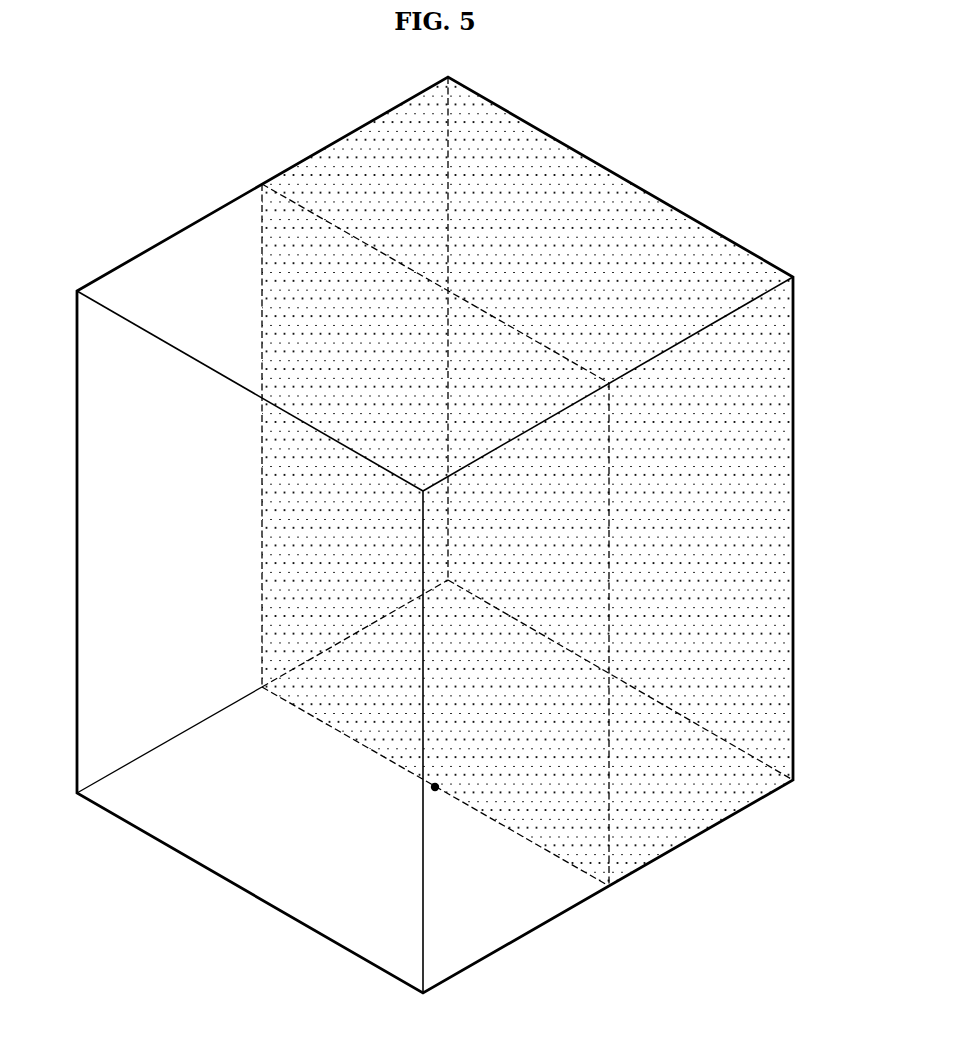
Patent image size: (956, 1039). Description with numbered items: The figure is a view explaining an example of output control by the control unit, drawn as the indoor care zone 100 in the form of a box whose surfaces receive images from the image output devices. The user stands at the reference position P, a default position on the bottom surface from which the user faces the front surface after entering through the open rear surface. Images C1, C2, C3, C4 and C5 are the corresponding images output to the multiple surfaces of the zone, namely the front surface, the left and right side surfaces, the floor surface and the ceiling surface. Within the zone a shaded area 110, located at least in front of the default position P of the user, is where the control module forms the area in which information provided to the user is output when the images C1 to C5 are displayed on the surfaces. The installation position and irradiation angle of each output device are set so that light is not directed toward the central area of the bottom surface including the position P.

The indoor care zone 100 is at (277, 110).
The area 110 is at (701, 376).
The image C1 is at (250, 642).
The image C2 is at (435, 283).
The image C3 is at (608, 581).
The image C4 is at (527, 680).
The image C5 is at (343, 786).
The reference position P is at (432, 790).